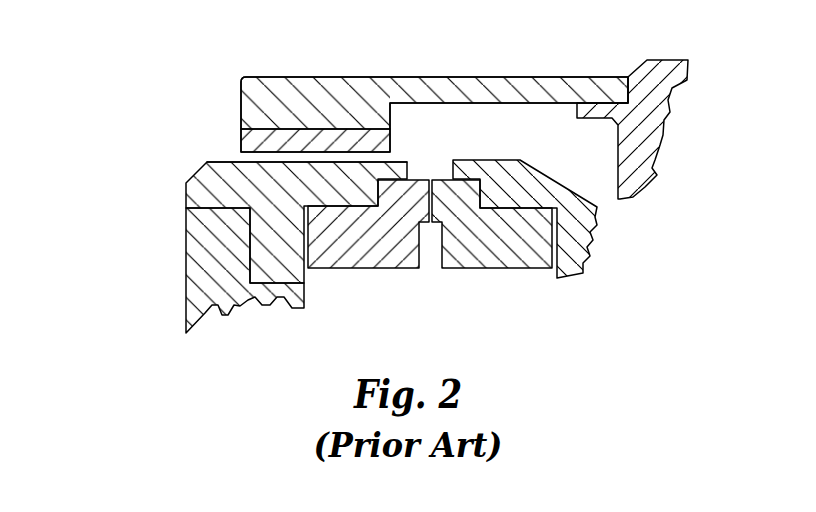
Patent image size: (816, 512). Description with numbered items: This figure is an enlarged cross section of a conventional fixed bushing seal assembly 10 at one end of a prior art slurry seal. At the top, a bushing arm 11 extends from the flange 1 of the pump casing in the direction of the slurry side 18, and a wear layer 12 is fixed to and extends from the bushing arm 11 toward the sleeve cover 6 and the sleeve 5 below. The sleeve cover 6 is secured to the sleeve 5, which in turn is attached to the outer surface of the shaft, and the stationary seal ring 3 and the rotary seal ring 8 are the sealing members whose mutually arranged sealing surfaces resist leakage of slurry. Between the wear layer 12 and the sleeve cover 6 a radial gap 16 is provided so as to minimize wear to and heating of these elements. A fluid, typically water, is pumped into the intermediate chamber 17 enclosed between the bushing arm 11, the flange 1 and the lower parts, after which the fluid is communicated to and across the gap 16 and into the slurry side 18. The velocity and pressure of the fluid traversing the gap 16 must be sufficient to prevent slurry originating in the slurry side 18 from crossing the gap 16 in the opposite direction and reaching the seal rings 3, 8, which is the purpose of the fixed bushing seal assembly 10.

The flange 1 is at (659, 78).
The stationary seal ring 3 is at (488, 260).
The sleeve 5 is at (206, 260).
The sleeve cover 6 is at (206, 192).
The rotary seal ring 8 is at (372, 258).
The fixed bushing seal assembly 10 is at (226, 75).
The bushing arm 11 is at (341, 94).
The wear layer 12 is at (251, 146).
The radial gap 16 is at (234, 156).
The intermediate chamber 17 is at (546, 143).
The slurry side 18 is at (85, 245).